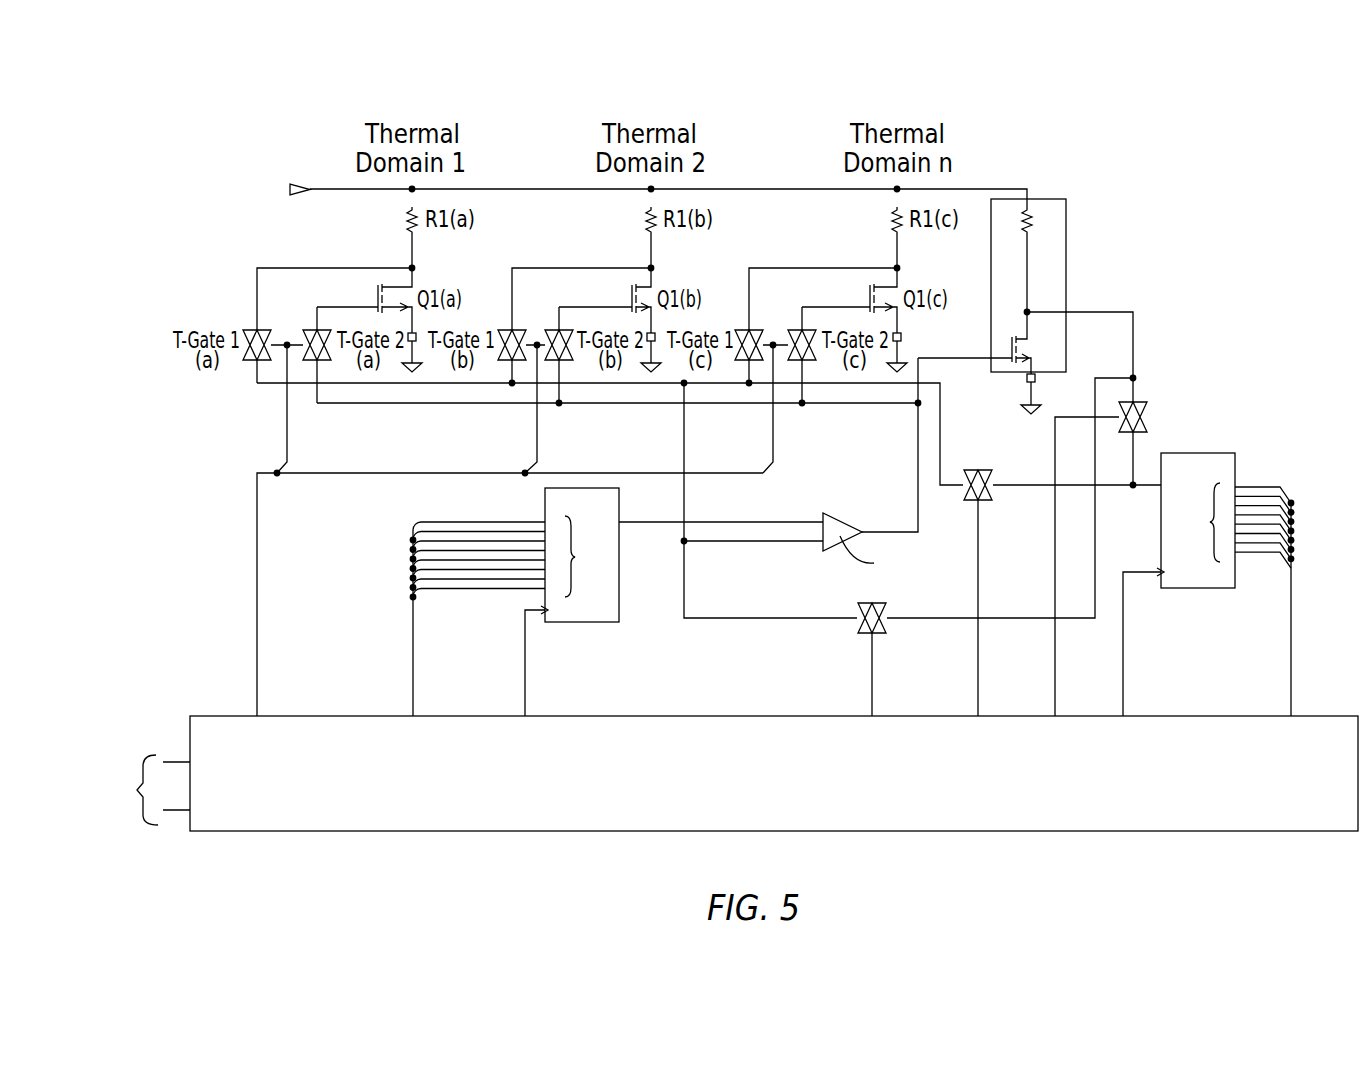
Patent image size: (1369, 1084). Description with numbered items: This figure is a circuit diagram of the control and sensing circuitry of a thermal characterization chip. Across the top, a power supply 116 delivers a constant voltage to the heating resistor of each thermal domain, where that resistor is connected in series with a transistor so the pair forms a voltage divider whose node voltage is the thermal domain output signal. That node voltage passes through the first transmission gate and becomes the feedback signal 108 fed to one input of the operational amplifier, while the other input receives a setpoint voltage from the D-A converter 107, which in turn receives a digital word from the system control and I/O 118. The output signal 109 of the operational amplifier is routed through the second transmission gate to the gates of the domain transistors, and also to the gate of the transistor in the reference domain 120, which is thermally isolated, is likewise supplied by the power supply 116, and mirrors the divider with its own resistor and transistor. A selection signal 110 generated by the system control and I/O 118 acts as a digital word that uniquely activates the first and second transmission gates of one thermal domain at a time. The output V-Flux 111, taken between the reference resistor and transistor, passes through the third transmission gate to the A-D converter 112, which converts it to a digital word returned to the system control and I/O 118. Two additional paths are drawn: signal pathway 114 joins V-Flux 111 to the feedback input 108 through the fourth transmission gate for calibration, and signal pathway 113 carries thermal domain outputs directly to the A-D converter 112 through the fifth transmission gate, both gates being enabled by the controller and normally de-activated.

The D-A converter 107 is at (619, 603).
The feedback signal 108 is at (706, 541).
The output signal 109 is at (898, 531).
The selection signal 110 is at (510, 593).
The V-Flux 111 is at (1138, 300).
The A-D converter 112 is at (1236, 462).
The signal pathway 113 is at (1062, 584).
The signal pathway 114 is at (995, 547).
The power supply 116 is at (113, 189).
The system control and I/O 118 is at (696, 773).
The reference domain 120 is at (1066, 226).